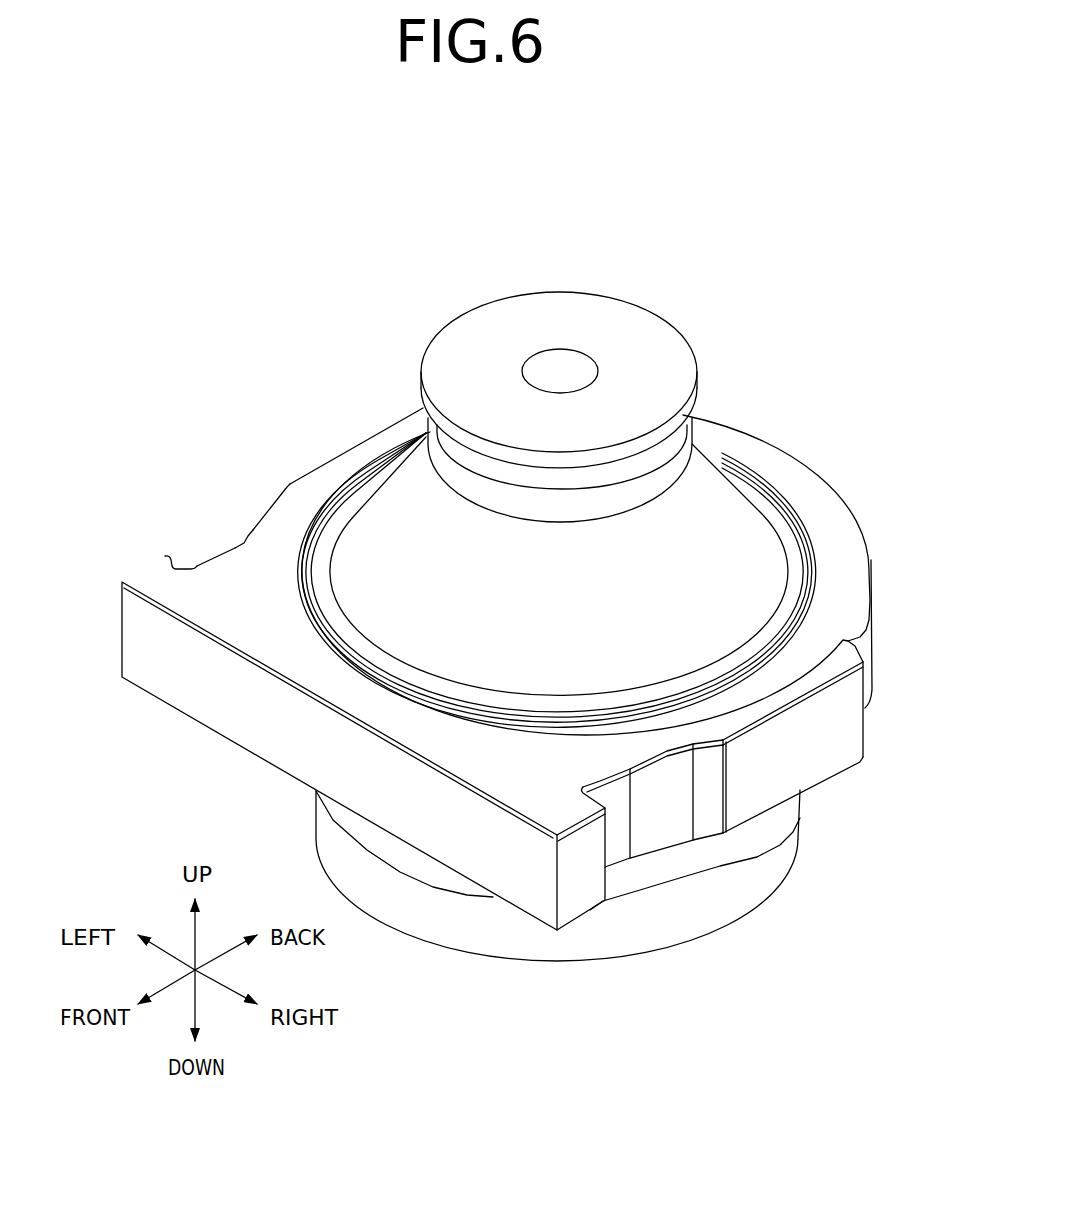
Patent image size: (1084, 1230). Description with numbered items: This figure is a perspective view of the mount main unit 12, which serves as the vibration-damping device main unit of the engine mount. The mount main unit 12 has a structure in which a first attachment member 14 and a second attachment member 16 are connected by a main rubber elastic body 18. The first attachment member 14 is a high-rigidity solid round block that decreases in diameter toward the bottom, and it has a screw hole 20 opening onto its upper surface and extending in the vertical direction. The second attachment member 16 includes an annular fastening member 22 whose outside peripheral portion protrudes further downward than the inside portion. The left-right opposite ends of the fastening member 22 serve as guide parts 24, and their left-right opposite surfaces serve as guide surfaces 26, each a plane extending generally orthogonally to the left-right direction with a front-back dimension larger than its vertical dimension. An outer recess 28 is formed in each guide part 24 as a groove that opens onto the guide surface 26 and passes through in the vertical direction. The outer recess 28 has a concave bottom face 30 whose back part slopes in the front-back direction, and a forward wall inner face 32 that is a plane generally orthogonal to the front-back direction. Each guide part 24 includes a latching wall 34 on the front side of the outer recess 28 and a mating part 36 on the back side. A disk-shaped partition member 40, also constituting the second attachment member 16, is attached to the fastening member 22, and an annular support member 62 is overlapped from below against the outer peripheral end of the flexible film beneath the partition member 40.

The mount main unit 12 is at (830, 376).
The first attachment member 14 is at (581, 365).
The second attachment member 16 is at (498, 688).
The main rubber elastic body 18 is at (730, 525).
The screw hole 20 is at (538, 385).
The fastening member 22 is at (873, 545).
The guide part 24 is at (340, 448).
The guide surface 26 is at (297, 481).
The outer recess 28 is at (252, 530).
The concave bottom face 30 is at (235, 540).
The forward wall inner face 32 is at (176, 565).
The latching wall 34 is at (145, 636).
The mating part 36 is at (389, 440).
The partition member 40 is at (667, 867).
The support member 62 is at (558, 895).